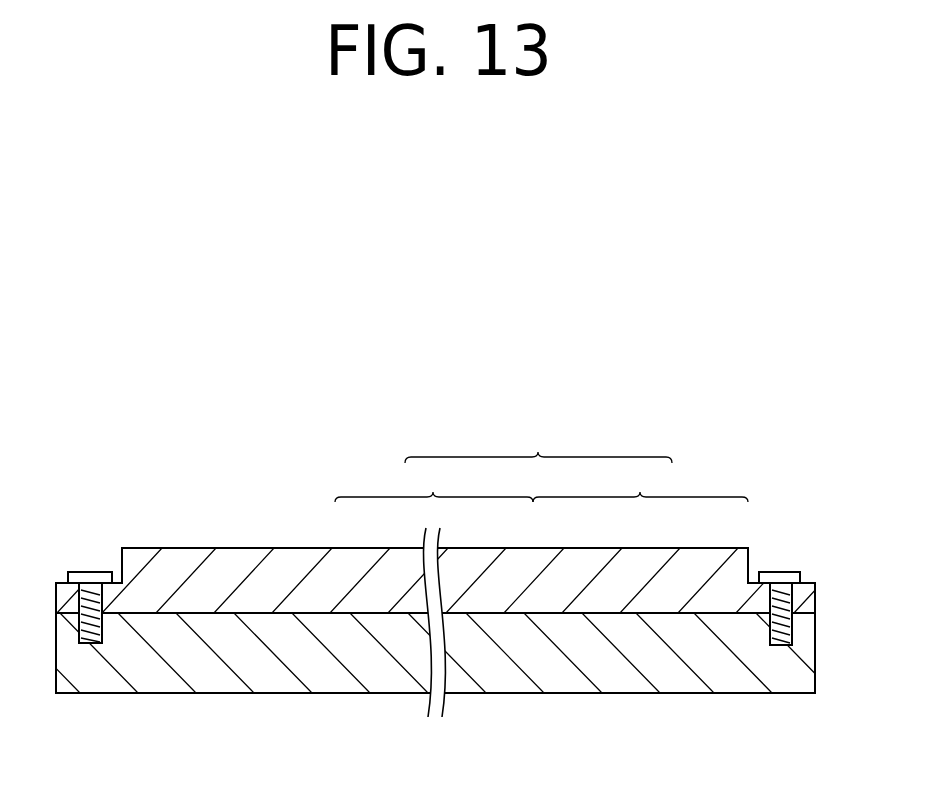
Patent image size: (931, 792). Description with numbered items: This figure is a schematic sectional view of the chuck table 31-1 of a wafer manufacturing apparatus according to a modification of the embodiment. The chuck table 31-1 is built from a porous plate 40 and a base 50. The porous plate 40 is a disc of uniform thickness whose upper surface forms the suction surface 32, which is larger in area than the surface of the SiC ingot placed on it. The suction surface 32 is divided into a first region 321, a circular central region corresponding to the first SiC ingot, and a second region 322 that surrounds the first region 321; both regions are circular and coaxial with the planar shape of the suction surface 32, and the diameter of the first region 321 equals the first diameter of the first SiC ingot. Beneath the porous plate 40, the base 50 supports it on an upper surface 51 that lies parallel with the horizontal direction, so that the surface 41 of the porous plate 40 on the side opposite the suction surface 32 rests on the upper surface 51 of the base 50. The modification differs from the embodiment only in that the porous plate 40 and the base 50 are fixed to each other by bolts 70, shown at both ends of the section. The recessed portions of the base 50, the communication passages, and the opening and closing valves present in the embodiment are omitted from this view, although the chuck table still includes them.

The chuck table 31-1 is at (447, 534).
The suction surface 32 is at (538, 445).
The first region 321 is at (434, 483).
The second region 322 is at (640, 484).
The porous plate 40 is at (180, 538).
The surface 41 is at (222, 613).
The base 50 is at (260, 605).
The upper surface 51 is at (167, 612).
The bolts 70 is at (90, 572).